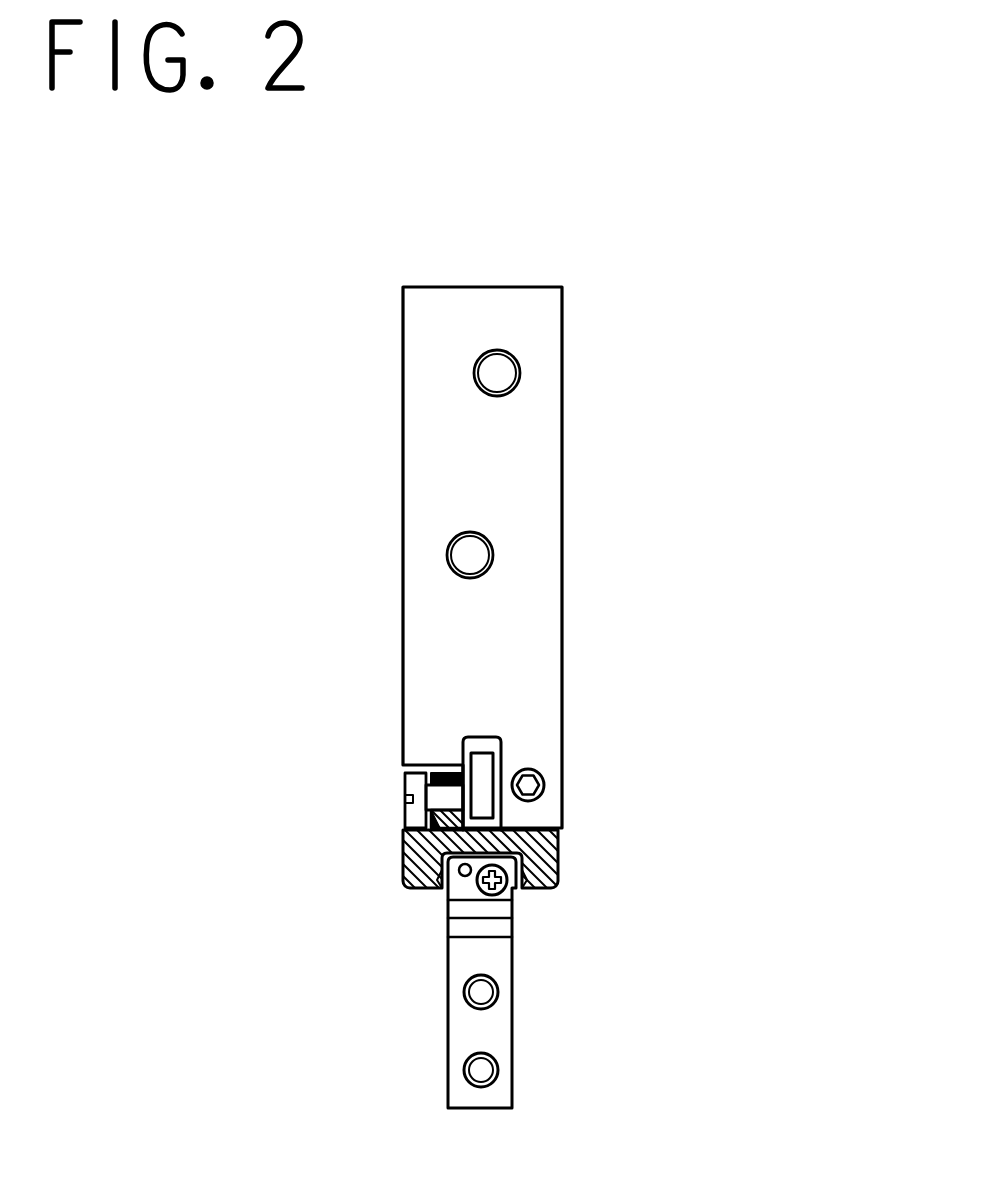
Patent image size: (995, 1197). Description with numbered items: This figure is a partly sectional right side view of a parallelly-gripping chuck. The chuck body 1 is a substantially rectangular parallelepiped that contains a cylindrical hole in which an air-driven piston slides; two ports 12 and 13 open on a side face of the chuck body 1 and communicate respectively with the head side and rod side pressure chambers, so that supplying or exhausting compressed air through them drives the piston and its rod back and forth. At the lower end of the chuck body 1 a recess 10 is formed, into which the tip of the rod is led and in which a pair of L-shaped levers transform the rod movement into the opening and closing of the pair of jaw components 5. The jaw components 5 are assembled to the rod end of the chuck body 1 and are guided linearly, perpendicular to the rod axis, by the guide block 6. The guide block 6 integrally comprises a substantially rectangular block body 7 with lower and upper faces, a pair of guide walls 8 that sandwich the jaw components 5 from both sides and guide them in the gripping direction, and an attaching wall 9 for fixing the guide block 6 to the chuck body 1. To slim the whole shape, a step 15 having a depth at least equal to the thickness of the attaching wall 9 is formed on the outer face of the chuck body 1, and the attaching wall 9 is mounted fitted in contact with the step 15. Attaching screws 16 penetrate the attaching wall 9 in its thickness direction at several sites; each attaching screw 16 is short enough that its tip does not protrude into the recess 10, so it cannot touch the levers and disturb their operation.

The chuck body 1 is at (555, 465).
The jaw component 5 is at (502, 1028).
The guide block 6 is at (398, 855).
The block body 7 is at (508, 830).
The guide wall 8 is at (422, 888).
The attaching wall 9 is at (418, 763).
The recess 10 is at (481, 740).
The port 12 is at (505, 372).
The port 13 is at (490, 550).
The step 15 is at (445, 767).
The attaching screw 16 is at (410, 790).